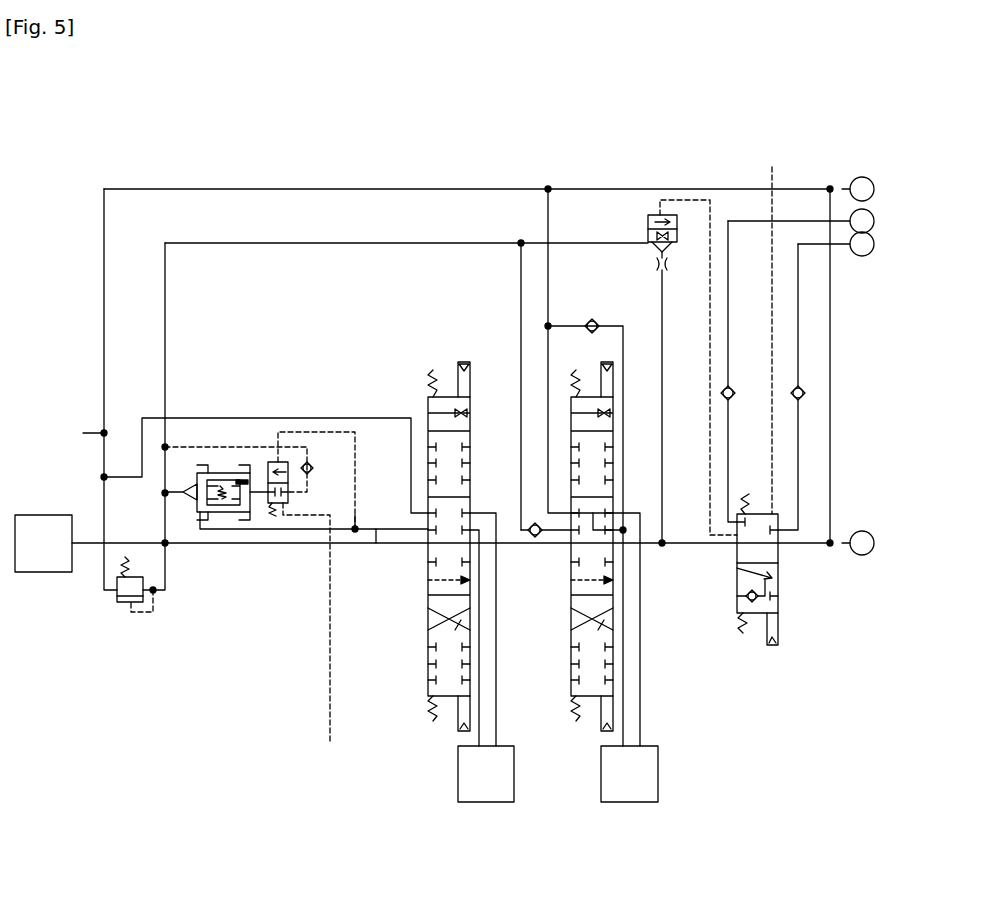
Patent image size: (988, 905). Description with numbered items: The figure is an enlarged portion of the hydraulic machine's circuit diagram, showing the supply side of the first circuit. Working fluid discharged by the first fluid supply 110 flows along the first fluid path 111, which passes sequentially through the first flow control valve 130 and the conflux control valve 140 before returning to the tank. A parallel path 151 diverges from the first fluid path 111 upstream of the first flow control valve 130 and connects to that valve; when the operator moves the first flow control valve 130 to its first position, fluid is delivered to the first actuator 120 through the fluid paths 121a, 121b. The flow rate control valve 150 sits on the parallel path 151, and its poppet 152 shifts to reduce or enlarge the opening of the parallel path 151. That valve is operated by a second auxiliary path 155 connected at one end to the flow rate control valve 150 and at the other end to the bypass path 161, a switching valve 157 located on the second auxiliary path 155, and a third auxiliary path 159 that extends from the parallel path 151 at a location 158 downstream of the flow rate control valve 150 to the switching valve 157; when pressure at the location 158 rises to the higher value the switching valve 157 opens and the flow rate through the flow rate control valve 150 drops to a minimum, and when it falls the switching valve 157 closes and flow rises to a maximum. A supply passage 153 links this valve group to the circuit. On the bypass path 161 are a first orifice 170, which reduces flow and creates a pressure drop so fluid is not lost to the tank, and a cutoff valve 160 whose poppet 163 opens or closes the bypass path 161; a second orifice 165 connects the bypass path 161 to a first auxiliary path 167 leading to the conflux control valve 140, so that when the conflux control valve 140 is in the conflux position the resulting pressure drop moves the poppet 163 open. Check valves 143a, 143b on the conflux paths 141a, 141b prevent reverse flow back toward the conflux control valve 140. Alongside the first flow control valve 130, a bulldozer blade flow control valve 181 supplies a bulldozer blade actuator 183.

The first fluid supply 110 is at (44, 573).
The first fluid path 111 is at (305, 545).
The first actuator 120 is at (492, 804).
The fluid path 121a is at (482, 715).
The fluid path 121b is at (498, 673).
The first flow control valve 130 is at (428, 606).
The conflux control valve 140 is at (779, 575).
The conflux path 141a is at (798, 432).
The conflux path 141b is at (727, 475).
The check valve 143a is at (798, 386).
The check valve 143b is at (727, 386).
The flow rate control valve 150 is at (212, 473).
The parallel path 151 is at (376, 545).
The poppet 152 is at (183, 492).
The supply passage 153 is at (242, 418).
The second auxiliary path 155 is at (190, 447).
The switching valve 157 is at (283, 462).
The location downstream of the flow rate control valve 158 is at (355, 532).
The third auxiliary path 159 is at (333, 432).
The cutoff valve 160 is at (648, 232).
The bypass path 161 is at (432, 243).
The poppet 163 is at (655, 226).
The second orifice 165 is at (666, 235).
The first auxiliary path 167 is at (700, 205).
The first orifice 170 is at (668, 263).
The bulldozer blade flow control valve 181 is at (613, 606).
The bulldozer blade actuator 183 is at (637, 804).